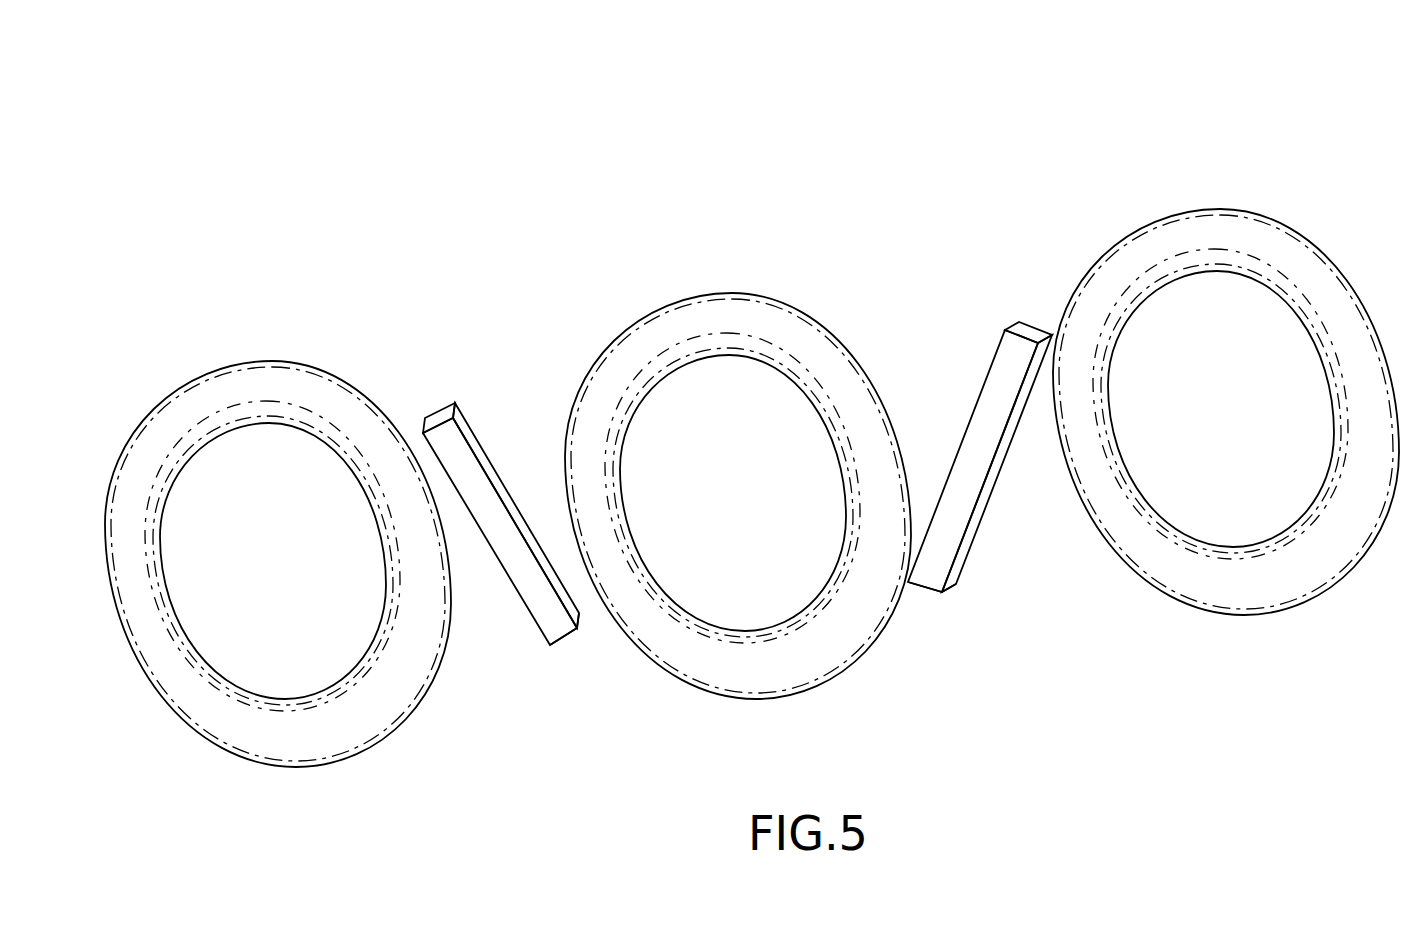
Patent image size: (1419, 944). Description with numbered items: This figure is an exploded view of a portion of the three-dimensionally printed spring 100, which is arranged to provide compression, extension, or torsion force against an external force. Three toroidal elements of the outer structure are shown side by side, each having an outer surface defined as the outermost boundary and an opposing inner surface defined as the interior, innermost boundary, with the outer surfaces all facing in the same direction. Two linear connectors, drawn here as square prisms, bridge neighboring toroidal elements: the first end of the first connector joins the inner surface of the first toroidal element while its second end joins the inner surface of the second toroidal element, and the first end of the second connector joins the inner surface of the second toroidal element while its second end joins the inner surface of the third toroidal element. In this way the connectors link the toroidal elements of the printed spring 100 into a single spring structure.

The 3D-printed spring 100 is at (752, 417).